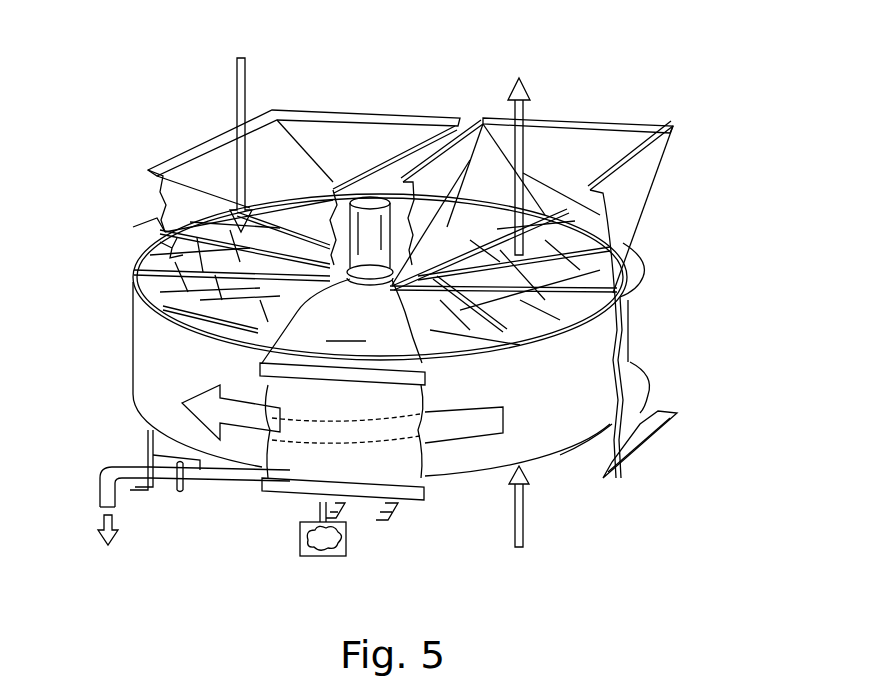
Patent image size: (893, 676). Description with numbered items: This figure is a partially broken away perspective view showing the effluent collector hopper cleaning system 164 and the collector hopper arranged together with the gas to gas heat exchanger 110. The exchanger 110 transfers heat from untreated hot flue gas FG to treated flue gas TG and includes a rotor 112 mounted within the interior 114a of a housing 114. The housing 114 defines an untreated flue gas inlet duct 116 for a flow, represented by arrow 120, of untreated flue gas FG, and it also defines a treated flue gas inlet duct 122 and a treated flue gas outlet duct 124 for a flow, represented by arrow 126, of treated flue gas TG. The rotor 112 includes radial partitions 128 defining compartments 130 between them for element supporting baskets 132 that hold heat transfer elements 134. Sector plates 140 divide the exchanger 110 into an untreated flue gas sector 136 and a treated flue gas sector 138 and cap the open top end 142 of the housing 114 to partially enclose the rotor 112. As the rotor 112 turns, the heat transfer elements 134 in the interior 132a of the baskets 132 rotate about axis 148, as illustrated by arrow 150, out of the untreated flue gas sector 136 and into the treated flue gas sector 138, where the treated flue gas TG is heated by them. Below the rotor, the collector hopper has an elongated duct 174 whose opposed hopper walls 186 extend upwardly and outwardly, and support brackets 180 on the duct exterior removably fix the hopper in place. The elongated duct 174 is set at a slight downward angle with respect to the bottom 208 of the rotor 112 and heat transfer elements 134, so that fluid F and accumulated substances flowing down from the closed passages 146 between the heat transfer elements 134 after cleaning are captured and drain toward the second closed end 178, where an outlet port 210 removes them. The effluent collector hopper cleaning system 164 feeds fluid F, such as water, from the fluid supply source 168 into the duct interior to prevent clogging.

The gas to gas heat exchanger 110 is at (672, 176).
The rotor 112 is at (605, 328).
The housing 114 is at (626, 356).
The interior 114a is at (612, 426).
The untreated flue gas inlet duct 116 is at (185, 184).
The arrow 120 is at (238, 92).
The treated flue gas inlet duct 122 is at (628, 445).
The treated flue gas outlet duct 124 is at (596, 150).
The arrow 126 is at (522, 102).
The radial partitions 128 is at (212, 320).
The compartments 130 is at (222, 340).
The element supporting baskets 132 is at (182, 286).
The interior 132a is at (134, 273).
The heat transfer elements 134 is at (170, 255).
The untreated flue gas sector 136 is at (305, 105).
The treated flue gas sector 138 is at (668, 116).
The sector plates 140 is at (342, 378).
The open top end 142 is at (182, 400).
The closed passages 146 is at (150, 230).
The axis 148 is at (368, 218).
The arrow 150 is at (342, 414).
The effluent collector hopper cleaning system 164 is at (300, 522).
The fluid supply source 168 is at (346, 536).
The elongated duct 174 is at (250, 477).
The second closed end 178 is at (100, 488).
The support brackets 180 is at (178, 492).
The opposed hopper walls 186 is at (148, 455).
The bottom 208 is at (212, 460).
The outlet port 210 is at (100, 512).